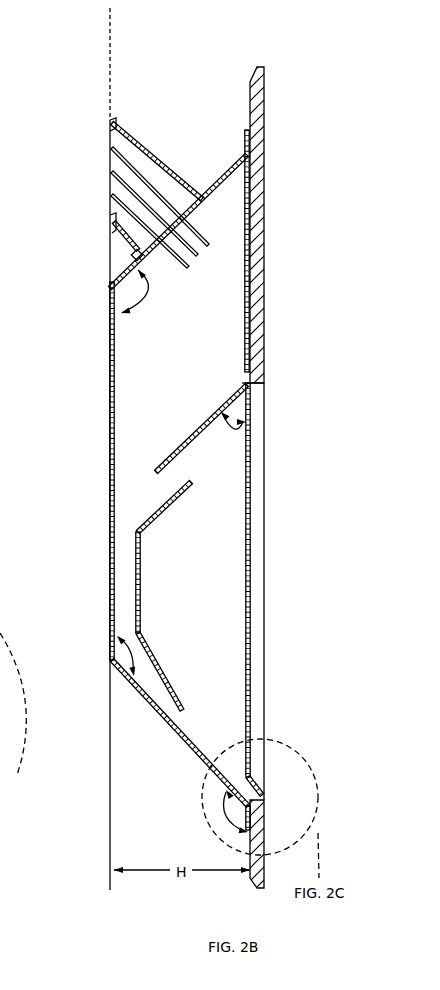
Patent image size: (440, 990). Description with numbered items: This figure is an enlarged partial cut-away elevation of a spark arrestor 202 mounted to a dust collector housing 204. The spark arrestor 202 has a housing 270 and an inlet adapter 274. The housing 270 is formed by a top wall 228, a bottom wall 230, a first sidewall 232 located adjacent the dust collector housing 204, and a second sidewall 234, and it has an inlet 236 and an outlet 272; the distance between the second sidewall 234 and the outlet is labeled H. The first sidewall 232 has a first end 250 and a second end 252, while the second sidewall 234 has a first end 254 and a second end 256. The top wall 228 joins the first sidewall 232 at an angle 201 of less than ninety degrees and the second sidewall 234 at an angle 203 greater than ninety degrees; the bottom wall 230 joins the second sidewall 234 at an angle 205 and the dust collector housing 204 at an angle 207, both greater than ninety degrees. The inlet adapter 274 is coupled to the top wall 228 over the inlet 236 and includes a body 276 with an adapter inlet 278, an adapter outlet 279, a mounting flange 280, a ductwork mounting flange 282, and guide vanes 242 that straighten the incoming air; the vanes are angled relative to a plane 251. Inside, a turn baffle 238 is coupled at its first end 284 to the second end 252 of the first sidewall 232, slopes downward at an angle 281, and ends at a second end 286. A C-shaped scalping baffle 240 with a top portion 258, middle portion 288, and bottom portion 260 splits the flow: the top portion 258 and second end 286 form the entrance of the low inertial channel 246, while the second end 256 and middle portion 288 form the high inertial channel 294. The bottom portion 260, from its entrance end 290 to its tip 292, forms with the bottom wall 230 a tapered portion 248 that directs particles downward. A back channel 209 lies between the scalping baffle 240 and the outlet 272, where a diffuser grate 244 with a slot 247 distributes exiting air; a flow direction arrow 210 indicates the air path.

The angle 201 is at (232, 477).
The spark arrestor 202 is at (75, 505).
The angle 203 is at (148, 300).
The dust collector housing 204 is at (303, 477).
The angle 205 is at (122, 665).
The angle 207 is at (216, 826).
The back channel 209 is at (240, 641).
The flow direction 210 is at (280, 601).
The top wall 228 is at (178, 249).
The bottom wall 230 is at (154, 730).
The first sidewall 232 is at (245, 355).
The second sidewall 234 is at (80, 505).
The inlet 236 is at (303, 477).
The turn baffle 238 is at (286, 589).
The scalping baffle 240 is at (183, 610).
The guide vanes 242 is at (179, 266).
The diffuser grate 244 is at (286, 589).
The low inertial channel 246 is at (286, 589).
The slot 247 is at (265, 800).
The tapered portion 248 is at (154, 730).
The first end 250 is at (178, 236).
The plane 251 is at (112, 30).
The second end 252 is at (248, 383).
The first end 254 is at (111, 288).
The second end 256 is at (112, 662).
The top portion 258 is at (183, 610).
The bottom portion 260 is at (183, 610).
The housing 270 is at (80, 505).
The outlet 272 is at (303, 477).
The inlet adapter 274 is at (137, 176).
The body 276 is at (118, 128).
The adapter inlet 278 is at (137, 226).
The adapter outlet 279 is at (143, 258).
The mounting flange 280 is at (186, 178).
The angle 281 is at (245, 428).
The ductwork mounting flange 282 is at (108, 122).
The first end 284 is at (186, 426).
The second end 286 is at (153, 467).
The middle portion 288 is at (183, 610).
The entrance end 290 is at (183, 610).
The tip 292 is at (186, 704).
The high inertial channel 294 is at (80, 505).